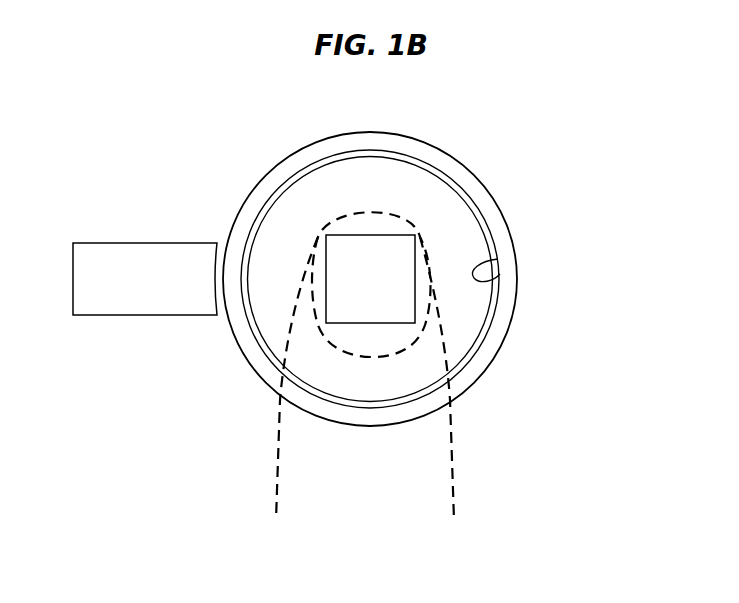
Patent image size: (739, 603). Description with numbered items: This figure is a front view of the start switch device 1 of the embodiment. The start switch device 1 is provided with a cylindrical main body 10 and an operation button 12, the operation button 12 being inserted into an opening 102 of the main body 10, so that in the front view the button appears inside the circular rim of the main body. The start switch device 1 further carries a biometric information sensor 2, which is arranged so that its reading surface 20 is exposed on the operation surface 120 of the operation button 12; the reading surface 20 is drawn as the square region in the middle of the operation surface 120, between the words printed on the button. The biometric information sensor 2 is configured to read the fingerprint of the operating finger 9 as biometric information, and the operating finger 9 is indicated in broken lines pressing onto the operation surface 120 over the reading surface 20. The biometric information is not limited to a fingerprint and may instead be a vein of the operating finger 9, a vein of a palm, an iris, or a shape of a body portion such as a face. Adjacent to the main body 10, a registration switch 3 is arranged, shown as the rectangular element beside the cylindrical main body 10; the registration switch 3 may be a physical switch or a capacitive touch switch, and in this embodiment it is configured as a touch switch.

The start switch device 1 is at (430, 140).
The main body 10 is at (495, 225).
The operation button 12 is at (472, 205).
The operation surface 120 is at (438, 195).
The biometric information sensor 2 is at (415, 298).
The reading surface 20 is at (398, 305).
The opening 102 is at (492, 273).
The registration switch 3 is at (175, 270).
The operating finger 9 is at (450, 453).